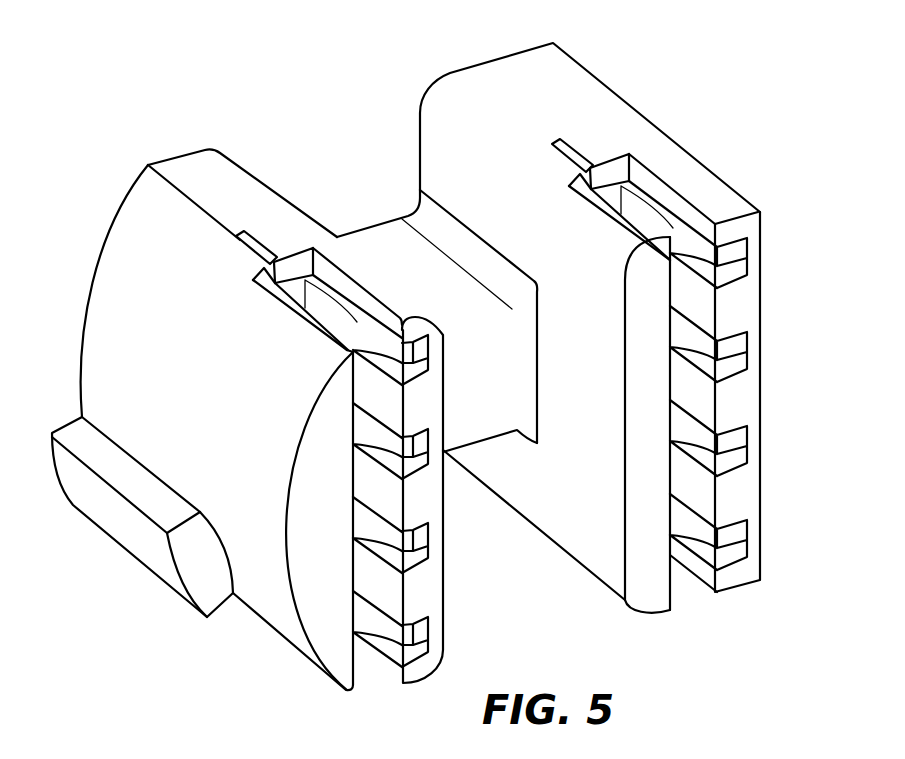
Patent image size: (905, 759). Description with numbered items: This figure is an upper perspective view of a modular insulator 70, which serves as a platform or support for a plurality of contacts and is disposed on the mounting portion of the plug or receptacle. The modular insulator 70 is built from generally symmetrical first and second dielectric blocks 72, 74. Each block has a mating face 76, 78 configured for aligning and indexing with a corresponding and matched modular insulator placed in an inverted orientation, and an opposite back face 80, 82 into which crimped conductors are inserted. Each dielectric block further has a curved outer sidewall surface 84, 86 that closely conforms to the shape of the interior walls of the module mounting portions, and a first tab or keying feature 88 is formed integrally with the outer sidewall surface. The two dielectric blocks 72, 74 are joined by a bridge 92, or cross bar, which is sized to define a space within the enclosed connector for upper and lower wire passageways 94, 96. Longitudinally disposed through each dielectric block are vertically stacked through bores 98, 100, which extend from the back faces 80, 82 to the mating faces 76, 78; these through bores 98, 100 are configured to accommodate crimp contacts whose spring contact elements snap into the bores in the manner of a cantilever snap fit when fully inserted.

The modular insulator 70 is at (157, 108).
The first dielectric block 72 is at (197, 425).
The second dielectric block 74 is at (698, 370).
The mating face 76 is at (327, 650).
The mating face 78 is at (645, 592).
The back face 80 is at (106, 216).
The back face 82 is at (585, 313).
The curved outer sidewall surface 84 is at (204, 374).
The curved outer sidewall surface 86 is at (757, 392).
The first tab or keying feature 88 is at (118, 531).
The bridge 92 is at (353, 232).
The upper wire passageway 94 is at (340, 198).
The lower wire passageway 96 is at (488, 450).
The through bores 98 is at (430, 358).
The through bores 100 is at (733, 263).